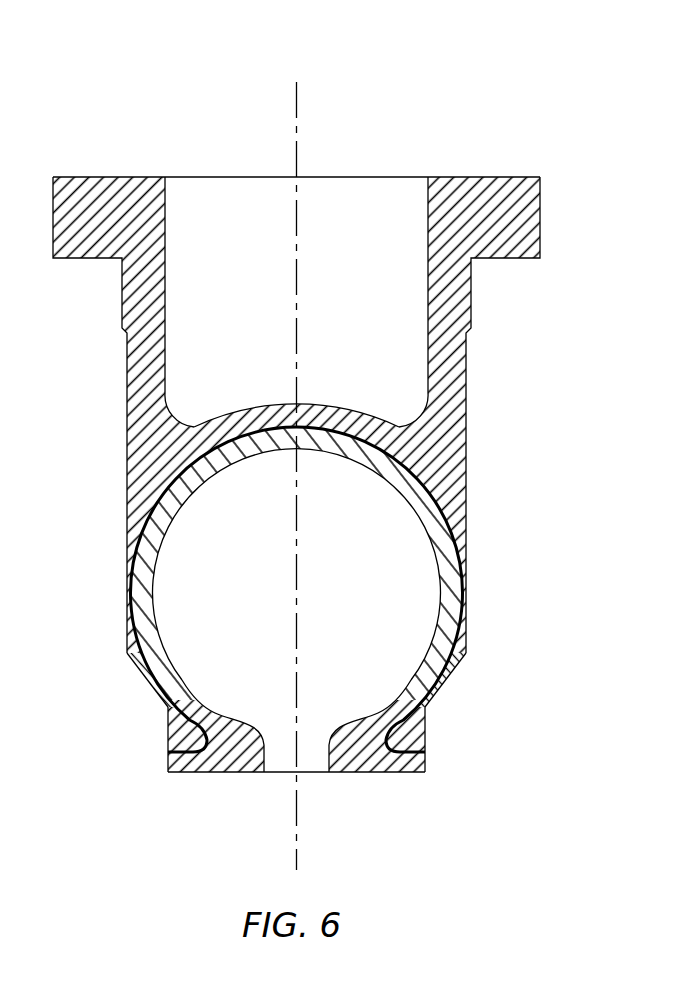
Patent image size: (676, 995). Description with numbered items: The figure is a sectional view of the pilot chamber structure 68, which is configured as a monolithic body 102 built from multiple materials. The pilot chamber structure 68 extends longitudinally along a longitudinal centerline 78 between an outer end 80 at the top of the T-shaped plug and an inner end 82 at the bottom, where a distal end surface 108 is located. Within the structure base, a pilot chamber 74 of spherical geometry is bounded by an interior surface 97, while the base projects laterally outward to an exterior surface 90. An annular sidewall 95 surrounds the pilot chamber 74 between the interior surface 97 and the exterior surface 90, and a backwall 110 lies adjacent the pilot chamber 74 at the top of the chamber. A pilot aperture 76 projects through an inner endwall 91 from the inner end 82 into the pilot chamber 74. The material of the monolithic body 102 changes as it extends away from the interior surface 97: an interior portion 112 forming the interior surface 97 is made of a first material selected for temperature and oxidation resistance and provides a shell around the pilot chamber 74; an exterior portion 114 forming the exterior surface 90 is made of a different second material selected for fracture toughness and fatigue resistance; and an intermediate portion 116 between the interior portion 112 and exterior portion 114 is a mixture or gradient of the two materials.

The pilot chamber structure 68 is at (338, 497).
The monolithic body 102 is at (338, 497).
The pilot chamber 74 is at (379, 623).
The pilot aperture 76 is at (311, 752).
The longitudinal centerline 78 is at (295, 108).
The outer end 80 is at (467, 177).
The inner end 82 is at (356, 796).
The distal end surface 108 is at (413, 772).
The exterior surface 90 is at (132, 572).
The inner endwall 91 is at (193, 773).
The annular sidewall 95 is at (140, 513).
The interior surface 97 is at (150, 577).
The backwall 110 is at (318, 402).
The interior portion 112 is at (179, 692).
The exterior portion 114 is at (128, 653).
The intermediate portion 116 is at (148, 677).